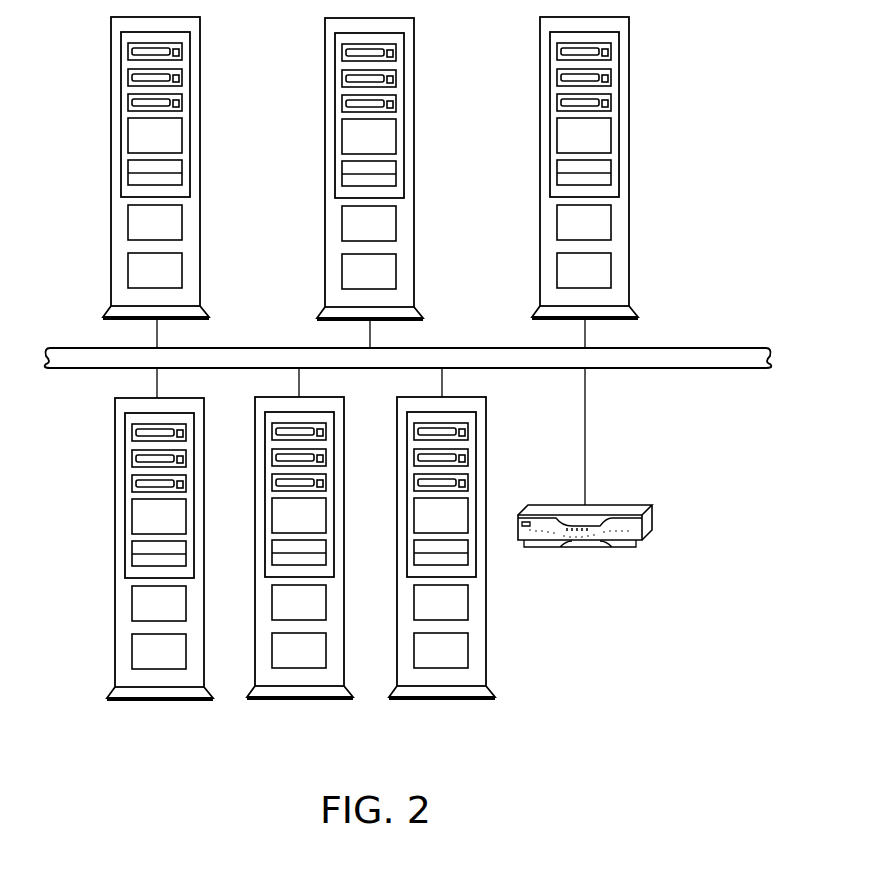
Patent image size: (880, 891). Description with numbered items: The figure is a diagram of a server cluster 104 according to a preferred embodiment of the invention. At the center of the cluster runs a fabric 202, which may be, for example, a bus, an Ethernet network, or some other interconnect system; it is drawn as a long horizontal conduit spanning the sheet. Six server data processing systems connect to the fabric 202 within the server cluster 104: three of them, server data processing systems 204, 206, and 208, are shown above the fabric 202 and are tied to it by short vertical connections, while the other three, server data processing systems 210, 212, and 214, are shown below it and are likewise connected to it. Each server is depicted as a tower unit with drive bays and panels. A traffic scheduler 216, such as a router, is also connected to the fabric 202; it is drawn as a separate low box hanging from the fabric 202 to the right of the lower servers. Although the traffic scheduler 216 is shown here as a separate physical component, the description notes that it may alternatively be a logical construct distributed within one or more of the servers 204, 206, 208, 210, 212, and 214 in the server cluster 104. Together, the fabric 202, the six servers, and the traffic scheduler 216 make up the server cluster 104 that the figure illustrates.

The server cluster 104 is at (725, 150).
The fabric 202 is at (708, 369).
The server data processing system 204 is at (111, 130).
The server data processing system 206 is at (325, 130).
The server data processing system 208 is at (540, 130).
The server data processing system 210 is at (160, 700).
The server data processing system 212 is at (299, 699).
The server data processing system 214 is at (441, 699).
The traffic scheduler 216 is at (653, 520).